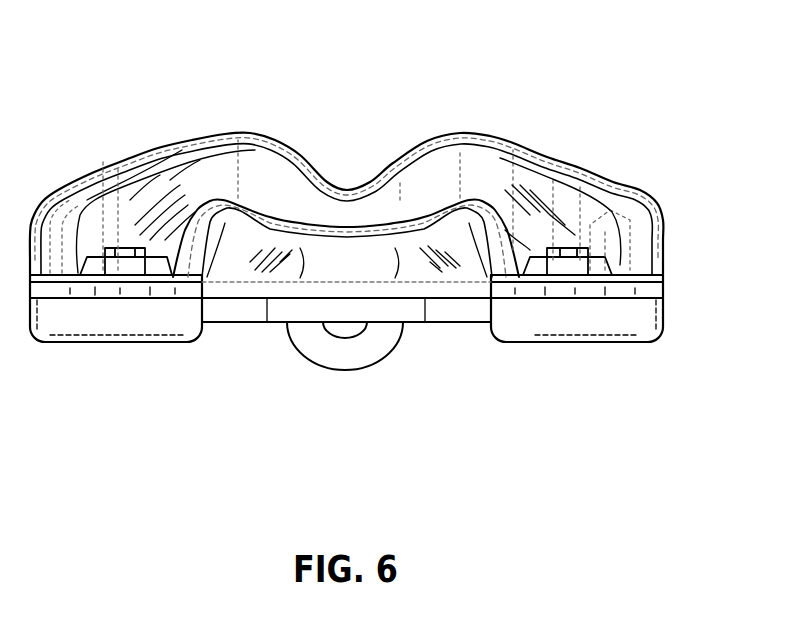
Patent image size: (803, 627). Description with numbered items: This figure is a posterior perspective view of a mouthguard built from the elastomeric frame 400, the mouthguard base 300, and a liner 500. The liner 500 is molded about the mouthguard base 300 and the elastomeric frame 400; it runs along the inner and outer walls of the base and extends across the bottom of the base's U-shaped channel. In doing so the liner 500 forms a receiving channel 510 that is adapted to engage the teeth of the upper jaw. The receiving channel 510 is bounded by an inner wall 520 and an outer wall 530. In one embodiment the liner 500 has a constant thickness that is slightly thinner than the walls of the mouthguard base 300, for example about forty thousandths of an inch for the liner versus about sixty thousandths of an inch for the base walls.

The elastomeric frame 400 is at (387, 216).
The liner 500 is at (268, 123).
The receiving channel 510 is at (208, 181).
The inner wall 520 is at (302, 267).
The outer wall 530 is at (527, 152).
The mouthguard base 300 is at (393, 270).